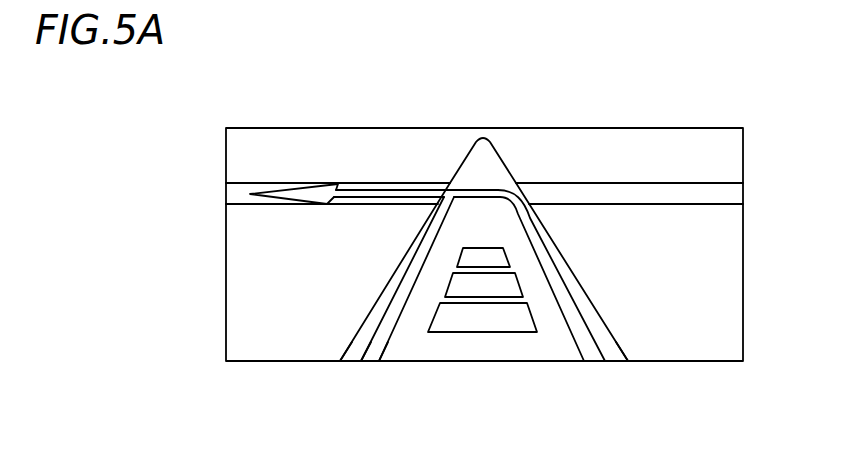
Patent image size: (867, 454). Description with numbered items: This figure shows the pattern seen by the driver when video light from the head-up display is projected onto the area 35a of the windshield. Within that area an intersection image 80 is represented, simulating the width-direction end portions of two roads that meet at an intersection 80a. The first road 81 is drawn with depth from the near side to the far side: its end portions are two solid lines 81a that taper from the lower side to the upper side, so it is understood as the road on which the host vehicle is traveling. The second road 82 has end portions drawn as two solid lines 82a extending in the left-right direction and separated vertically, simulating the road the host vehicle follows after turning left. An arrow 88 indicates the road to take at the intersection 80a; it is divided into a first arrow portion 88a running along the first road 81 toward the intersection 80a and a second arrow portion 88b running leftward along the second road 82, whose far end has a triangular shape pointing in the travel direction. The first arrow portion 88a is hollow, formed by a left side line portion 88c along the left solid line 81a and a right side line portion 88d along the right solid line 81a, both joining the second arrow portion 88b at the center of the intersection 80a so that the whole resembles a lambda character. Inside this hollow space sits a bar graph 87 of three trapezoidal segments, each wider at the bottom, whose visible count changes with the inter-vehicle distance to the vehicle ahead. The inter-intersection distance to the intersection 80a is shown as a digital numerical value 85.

The area 35a is at (688, 127).
The intersection image 80 is at (486, 243).
The intersection 80a is at (488, 192).
The first road 81 is at (480, 140).
The solid lines 81a is at (338, 355).
The second road 82 is at (486, 138).
The solid lines 82a is at (263, 188).
The digital numerical value 85 is at (698, 305).
The bar graph 87 is at (497, 317).
The arrow 88 is at (332, 181).
The first arrow portion 88a is at (405, 272).
The second arrow portion 88b is at (362, 188).
The left side line portion 88c is at (369, 355).
The right side line portion 88d is at (597, 356).